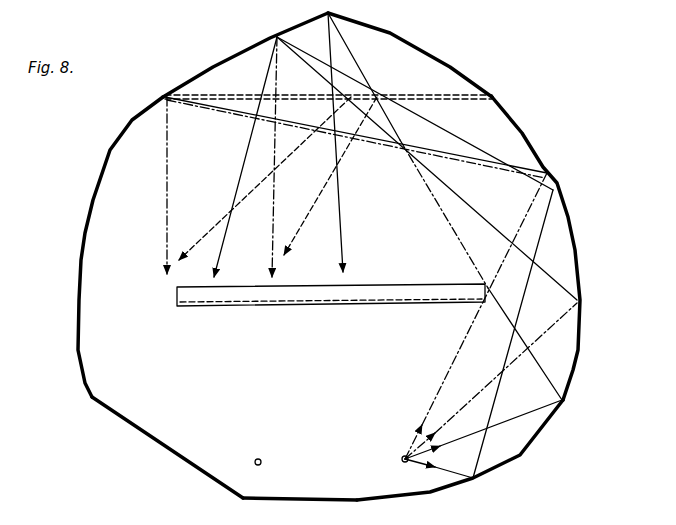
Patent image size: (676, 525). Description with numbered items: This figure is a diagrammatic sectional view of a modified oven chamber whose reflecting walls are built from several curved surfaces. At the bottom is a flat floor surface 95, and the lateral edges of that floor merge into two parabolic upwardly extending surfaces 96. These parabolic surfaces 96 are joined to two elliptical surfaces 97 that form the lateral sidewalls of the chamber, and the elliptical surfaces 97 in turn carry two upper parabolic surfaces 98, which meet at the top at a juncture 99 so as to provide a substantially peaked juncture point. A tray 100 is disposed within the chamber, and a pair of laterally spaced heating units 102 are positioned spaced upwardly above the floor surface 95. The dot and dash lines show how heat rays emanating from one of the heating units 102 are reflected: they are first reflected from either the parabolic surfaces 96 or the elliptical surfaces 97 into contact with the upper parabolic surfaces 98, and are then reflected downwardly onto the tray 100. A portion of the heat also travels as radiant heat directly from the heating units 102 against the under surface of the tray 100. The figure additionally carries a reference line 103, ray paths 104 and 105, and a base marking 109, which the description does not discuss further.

The flat floor surface 95 is at (334, 497).
The parabolic upwardly extending surfaces 96 is at (160, 470).
The elliptical surfaces 97 is at (92, 206).
The parabolic surfaces 98 is at (240, 51).
The peaked juncture point 99 is at (341, 22).
The tray 100 is at (270, 302).
The heating units 102 is at (257, 458).
The plane of dashed reference line 103 is at (410, 93).
The reflected light ray 104 is at (314, 207).
The reflected light ray 105 is at (258, 185).
The base of reflector 109 is at (282, 520).